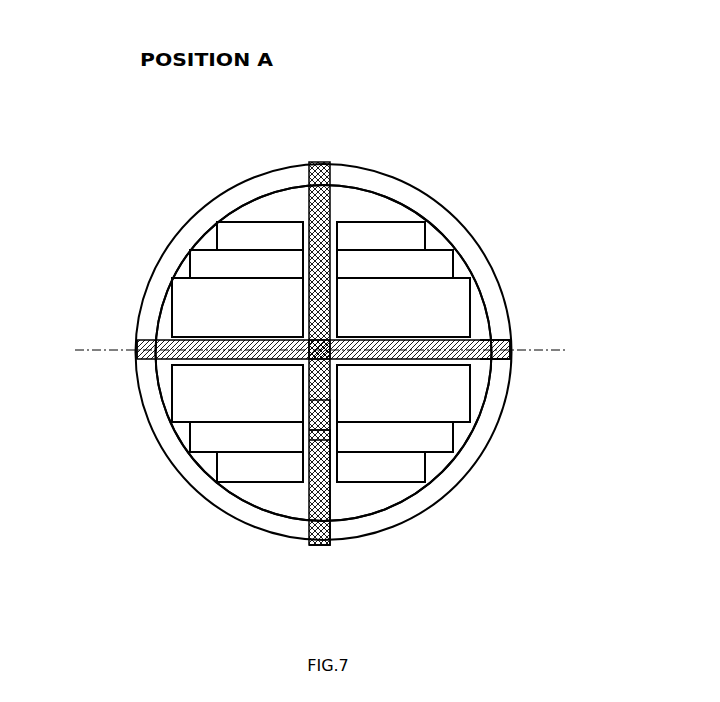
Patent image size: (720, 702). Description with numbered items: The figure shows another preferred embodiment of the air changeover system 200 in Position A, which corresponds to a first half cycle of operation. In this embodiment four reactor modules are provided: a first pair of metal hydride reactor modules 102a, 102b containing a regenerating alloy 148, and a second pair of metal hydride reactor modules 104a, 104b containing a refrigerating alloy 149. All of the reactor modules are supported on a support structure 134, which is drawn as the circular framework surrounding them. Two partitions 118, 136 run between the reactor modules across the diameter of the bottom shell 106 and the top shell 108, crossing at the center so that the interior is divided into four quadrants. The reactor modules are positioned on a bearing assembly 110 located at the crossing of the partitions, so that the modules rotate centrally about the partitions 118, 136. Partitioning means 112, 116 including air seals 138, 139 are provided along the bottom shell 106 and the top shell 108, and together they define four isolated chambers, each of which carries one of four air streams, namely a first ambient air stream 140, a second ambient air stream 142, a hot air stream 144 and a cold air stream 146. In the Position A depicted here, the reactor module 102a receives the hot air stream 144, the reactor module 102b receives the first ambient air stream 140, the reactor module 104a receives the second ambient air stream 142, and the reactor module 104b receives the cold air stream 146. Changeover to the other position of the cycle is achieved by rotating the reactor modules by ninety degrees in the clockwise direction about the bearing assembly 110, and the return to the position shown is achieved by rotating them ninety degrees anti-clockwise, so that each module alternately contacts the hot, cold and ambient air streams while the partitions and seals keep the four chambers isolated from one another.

The mixing device assembly 200 is at (523, 91).
The metal hydride reactor module 102a is at (262, 231).
The metal hydride reactor module 102b is at (248, 464).
The metal hydride reactor module 104a is at (396, 232).
The metal hydride reactor module 104b is at (364, 478).
The bottom shell 106 is at (494, 258).
The top shell 108 is at (494, 258).
The bearing assembly 110 is at (339, 363).
The partitioning means 112 is at (334, 438).
The partitioning means 116 is at (334, 438).
The partition 118 is at (306, 413).
The support structure 134 is at (147, 322).
The partition 136 is at (490, 342).
The air seal 138 is at (514, 362).
The air seal 139 is at (514, 362).
The first ambient air stream 140 is at (305, 421).
The second ambient air stream 142 is at (607, 179).
The hot air stream 144 is at (83, 272).
The cold air stream 146 is at (607, 510).
The regenerating alloy 148 is at (237, 350).
The refrigerating alloy 149 is at (403, 350).